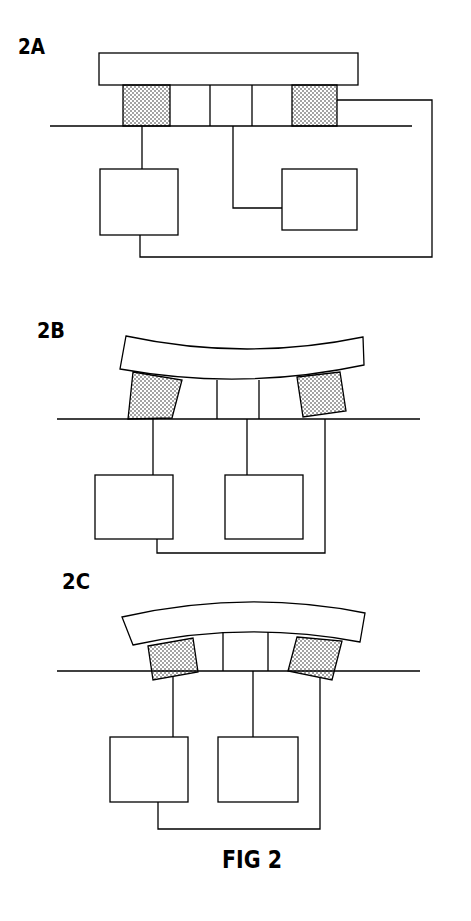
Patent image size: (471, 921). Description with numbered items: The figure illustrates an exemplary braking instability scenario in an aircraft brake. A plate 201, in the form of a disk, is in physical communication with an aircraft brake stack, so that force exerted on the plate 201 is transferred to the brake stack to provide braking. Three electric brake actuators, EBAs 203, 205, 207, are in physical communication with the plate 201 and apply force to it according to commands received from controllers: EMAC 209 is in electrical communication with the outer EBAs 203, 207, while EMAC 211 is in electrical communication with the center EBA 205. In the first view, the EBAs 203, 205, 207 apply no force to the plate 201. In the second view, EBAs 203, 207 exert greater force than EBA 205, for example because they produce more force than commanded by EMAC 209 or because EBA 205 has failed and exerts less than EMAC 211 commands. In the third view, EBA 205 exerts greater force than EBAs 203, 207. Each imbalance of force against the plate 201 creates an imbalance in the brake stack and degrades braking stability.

In FIG. 2A, the plate 201 is at (337, 67).
In FIG. 2B, the plate 201 is at (345, 357).
In FIG. 2C, the plate 201 is at (345, 623).
In FIG. 2A, the EBA 203 is at (137, 117).
In FIG. 2B, the EBA 203 is at (142, 405).
In FIG. 2C, the EBA 203 is at (160, 660).
In FIG. 2A, the EBA 205 is at (218, 117).
In FIG. 2B, the EBA 205 is at (233, 407).
In FIG. 2C, the EBA 205 is at (245, 658).
In FIG. 2A, the EBA 207 is at (315, 117).
In FIG. 2B, the EBA 207 is at (322, 405).
In FIG. 2C, the EBA 207 is at (325, 660).
In FIG. 2A, the EMAC 209 is at (157, 225).
In FIG. 2B, the EMAC 209 is at (152, 531).
In FIG. 2C, the EMAC 209 is at (167, 794).
In FIG. 2A, the EMAC 211 is at (337, 222).
In FIG. 2B, the EMAC 211 is at (282, 531).
In FIG. 2C, the EMAC 211 is at (276, 794).